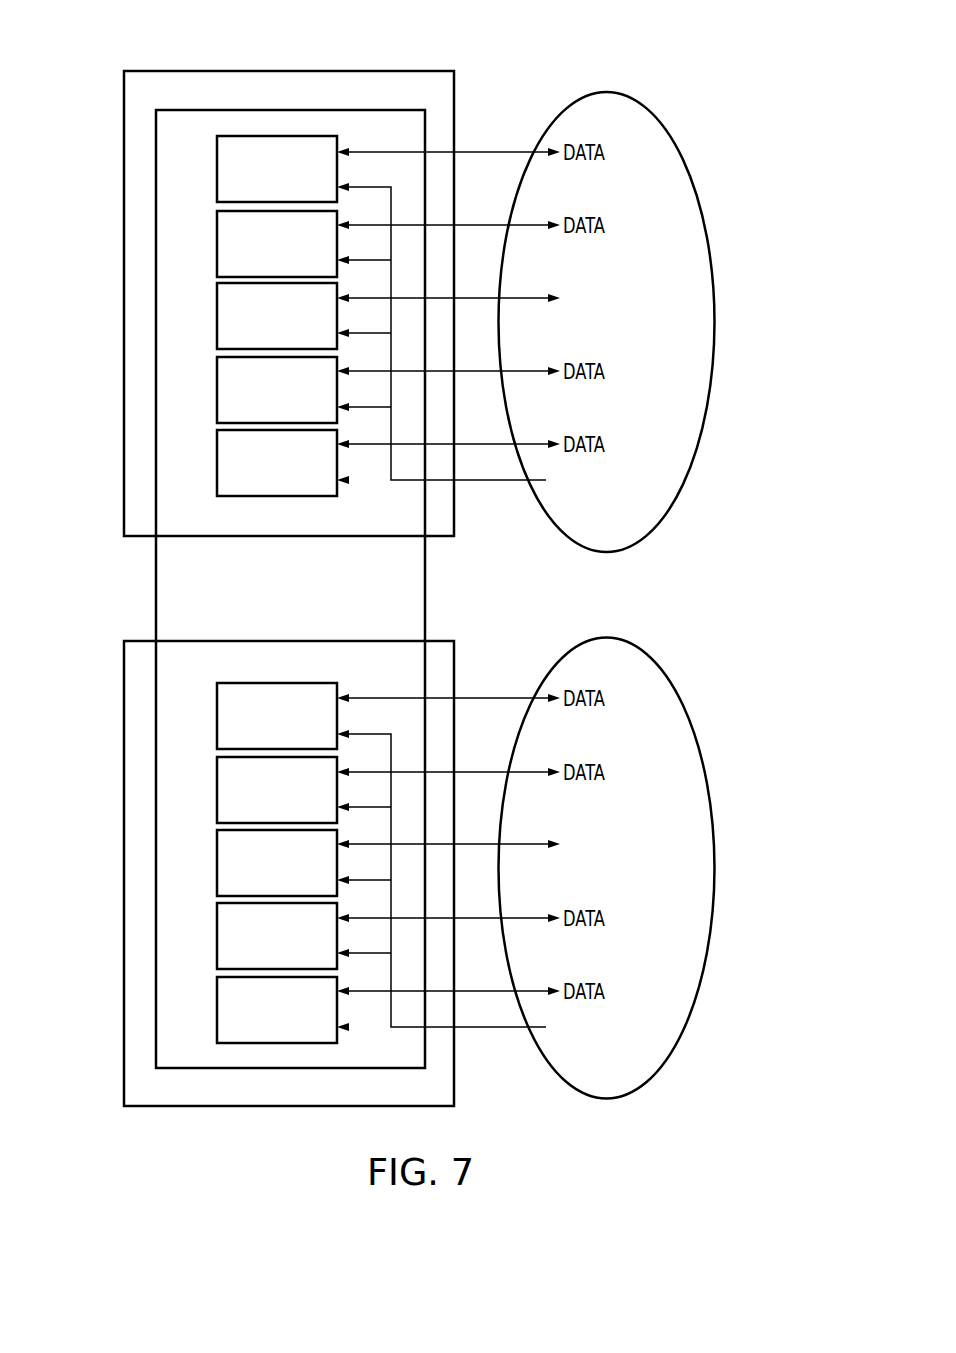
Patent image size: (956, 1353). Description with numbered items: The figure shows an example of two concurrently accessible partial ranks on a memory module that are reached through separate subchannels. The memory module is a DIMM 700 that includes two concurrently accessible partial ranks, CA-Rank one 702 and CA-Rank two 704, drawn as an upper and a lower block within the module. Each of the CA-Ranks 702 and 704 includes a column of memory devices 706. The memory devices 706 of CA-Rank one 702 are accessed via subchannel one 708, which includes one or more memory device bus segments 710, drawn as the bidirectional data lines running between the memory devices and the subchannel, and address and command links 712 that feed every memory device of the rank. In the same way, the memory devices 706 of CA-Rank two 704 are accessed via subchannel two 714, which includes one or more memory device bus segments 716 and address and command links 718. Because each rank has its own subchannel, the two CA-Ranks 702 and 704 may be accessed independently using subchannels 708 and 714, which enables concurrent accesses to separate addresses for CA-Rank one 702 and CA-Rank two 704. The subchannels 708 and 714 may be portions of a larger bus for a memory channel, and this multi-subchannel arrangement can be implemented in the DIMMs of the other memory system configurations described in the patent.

The DIMM 700 is at (228, 589).
The CA-Rank one 702 is at (250, 79).
The CA-Rank two 704 is at (253, 1097).
The memory devices 706 is at (223, 171).
The subchannel one 708 is at (708, 233).
The memory device bus segments 710 is at (606, 300).
The address and command links 712 is at (641, 471).
The subchannel two 714 is at (708, 779).
The memory device bus segments 716 is at (606, 848).
The address and command links 718 is at (641, 1018).